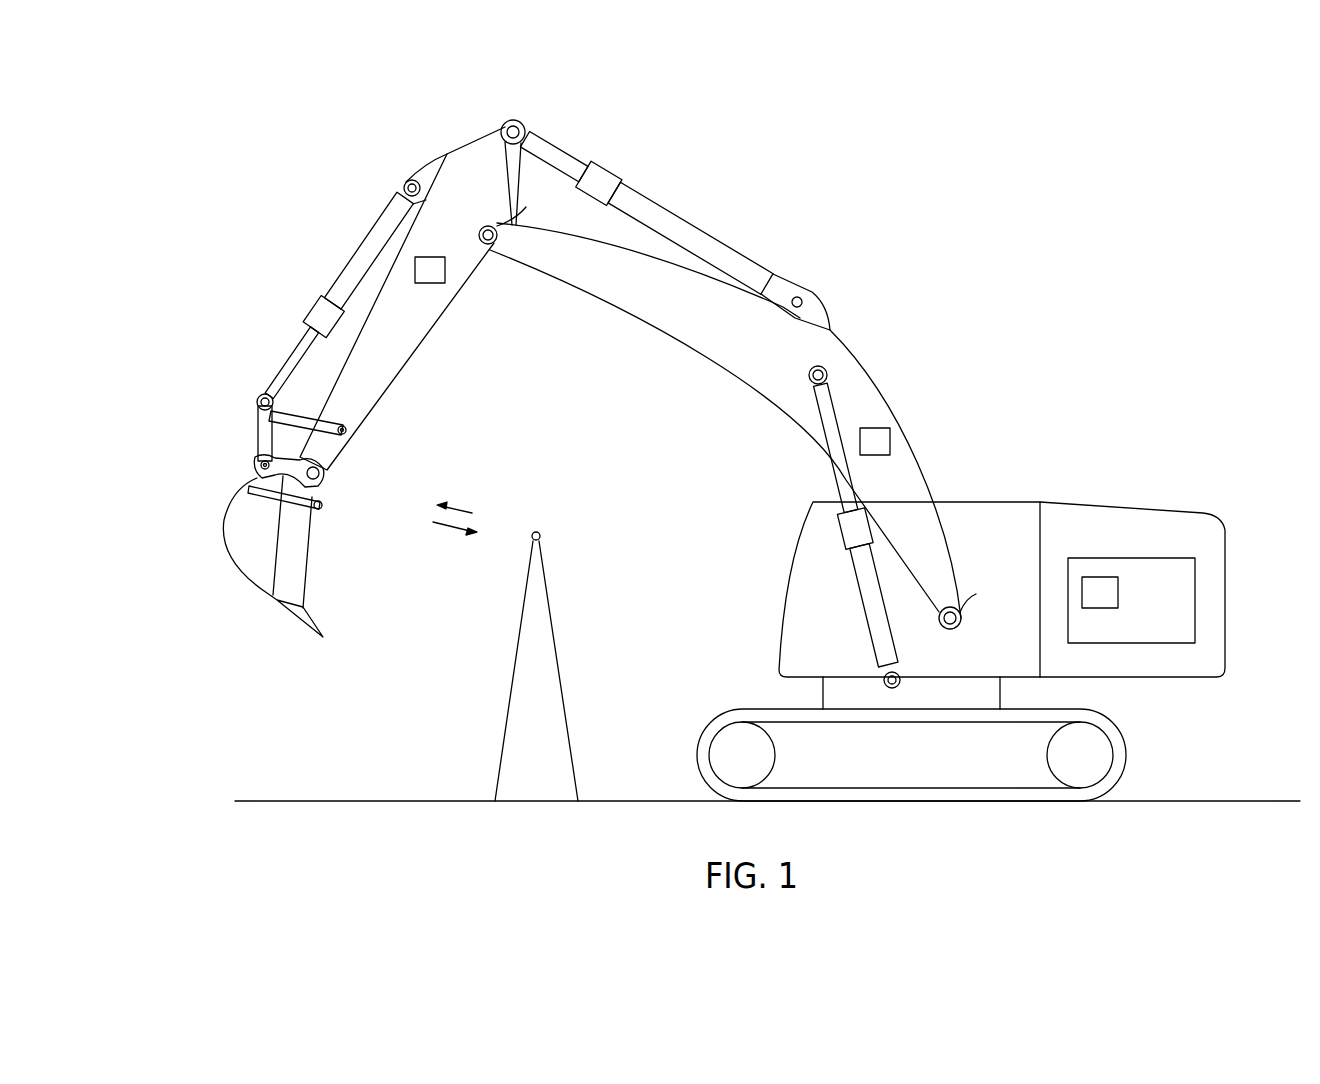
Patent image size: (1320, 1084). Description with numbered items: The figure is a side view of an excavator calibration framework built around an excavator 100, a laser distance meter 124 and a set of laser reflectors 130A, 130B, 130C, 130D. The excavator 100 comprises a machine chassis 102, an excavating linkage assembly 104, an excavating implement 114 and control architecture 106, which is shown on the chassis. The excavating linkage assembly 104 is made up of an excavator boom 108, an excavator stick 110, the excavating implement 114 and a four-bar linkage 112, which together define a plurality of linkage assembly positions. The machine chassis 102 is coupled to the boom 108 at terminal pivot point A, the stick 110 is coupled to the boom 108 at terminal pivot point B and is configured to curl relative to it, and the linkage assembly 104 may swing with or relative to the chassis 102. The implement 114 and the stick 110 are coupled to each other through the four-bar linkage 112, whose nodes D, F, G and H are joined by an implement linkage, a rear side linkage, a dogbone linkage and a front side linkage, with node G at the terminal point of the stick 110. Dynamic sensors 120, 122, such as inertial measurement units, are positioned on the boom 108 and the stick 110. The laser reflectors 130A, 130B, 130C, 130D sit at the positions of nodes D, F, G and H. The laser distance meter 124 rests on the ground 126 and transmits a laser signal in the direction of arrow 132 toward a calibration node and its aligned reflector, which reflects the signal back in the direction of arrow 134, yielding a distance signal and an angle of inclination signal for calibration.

The excavator 100 is at (1025, 236).
The machine chassis 102 is at (1083, 502).
The excavating linkage assembly 104 is at (722, 163).
The control architecture 106 is at (1118, 592).
The excavator boom 108 is at (703, 310).
The excavator stick 110 is at (407, 343).
The four-bar linkage 112 is at (283, 414).
The excavating implement 114 is at (222, 535).
The dynamic sensor 120 is at (890, 441).
The dynamic sensor 122 is at (445, 276).
The laser distance meter 124 is at (557, 655).
The ground 126 is at (1217, 801).
The laser reflector 130A is at (347, 433).
The laser reflector 130B is at (258, 396).
The laser reflector 130C is at (320, 476).
The laser reflector 130D is at (259, 463).
The arrow 132 is at (472, 513).
The arrow 134 is at (450, 527).